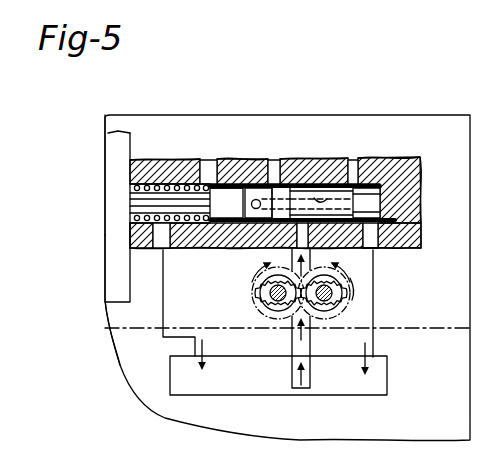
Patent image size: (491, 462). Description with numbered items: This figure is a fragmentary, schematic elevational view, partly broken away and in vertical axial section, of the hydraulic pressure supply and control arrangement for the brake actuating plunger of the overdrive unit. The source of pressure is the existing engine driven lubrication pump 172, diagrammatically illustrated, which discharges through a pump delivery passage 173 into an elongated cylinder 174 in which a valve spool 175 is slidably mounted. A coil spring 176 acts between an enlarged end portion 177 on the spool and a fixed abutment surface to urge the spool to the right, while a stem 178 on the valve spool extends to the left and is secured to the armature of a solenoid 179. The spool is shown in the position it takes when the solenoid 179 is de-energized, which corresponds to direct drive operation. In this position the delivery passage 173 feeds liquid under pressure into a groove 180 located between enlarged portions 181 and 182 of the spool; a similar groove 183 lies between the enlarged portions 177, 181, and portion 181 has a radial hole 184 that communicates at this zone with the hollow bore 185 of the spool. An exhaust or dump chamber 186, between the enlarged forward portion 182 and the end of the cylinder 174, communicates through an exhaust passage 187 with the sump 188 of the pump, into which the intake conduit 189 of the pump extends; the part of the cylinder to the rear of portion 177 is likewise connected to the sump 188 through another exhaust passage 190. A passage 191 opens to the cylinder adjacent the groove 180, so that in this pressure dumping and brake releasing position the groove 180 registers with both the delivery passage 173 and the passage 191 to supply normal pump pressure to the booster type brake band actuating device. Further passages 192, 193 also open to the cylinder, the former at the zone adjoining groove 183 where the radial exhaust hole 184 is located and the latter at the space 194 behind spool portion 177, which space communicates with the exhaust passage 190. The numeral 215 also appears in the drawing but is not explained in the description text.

The lubrication pump 172 is at (350, 294).
The pump delivery passage 173 is at (308, 244).
The elongated cylinder 174 is at (374, 249).
The valve spool 175 is at (227, 183).
The coil spring 176 is at (172, 159).
The enlarged end portion 177 is at (214, 243).
The stem 178 is at (133, 198).
The solenoid 179 is at (105, 150).
The groove 180 is at (333, 153).
The enlarged portion 181 is at (278, 163).
The enlarged forward portion 182 is at (380, 200).
The groove 183 is at (242, 248).
The radial hole 184 is at (250, 203).
The hollow bore 185 is at (353, 184).
The exhaust or dump chamber 186 is at (393, 218).
The exhaust passage 187 is at (380, 233).
The sump 188 is at (387, 375).
The intake conduit 189 is at (292, 345).
The exhaust passage 190 is at (105, 265).
The passage 191 is at (368, 158).
The passage 192 is at (272, 157).
The passage 193 is at (208, 180).
The space 194 is at (133, 190).
The pump outlet conduit 215 is at (292, 256).